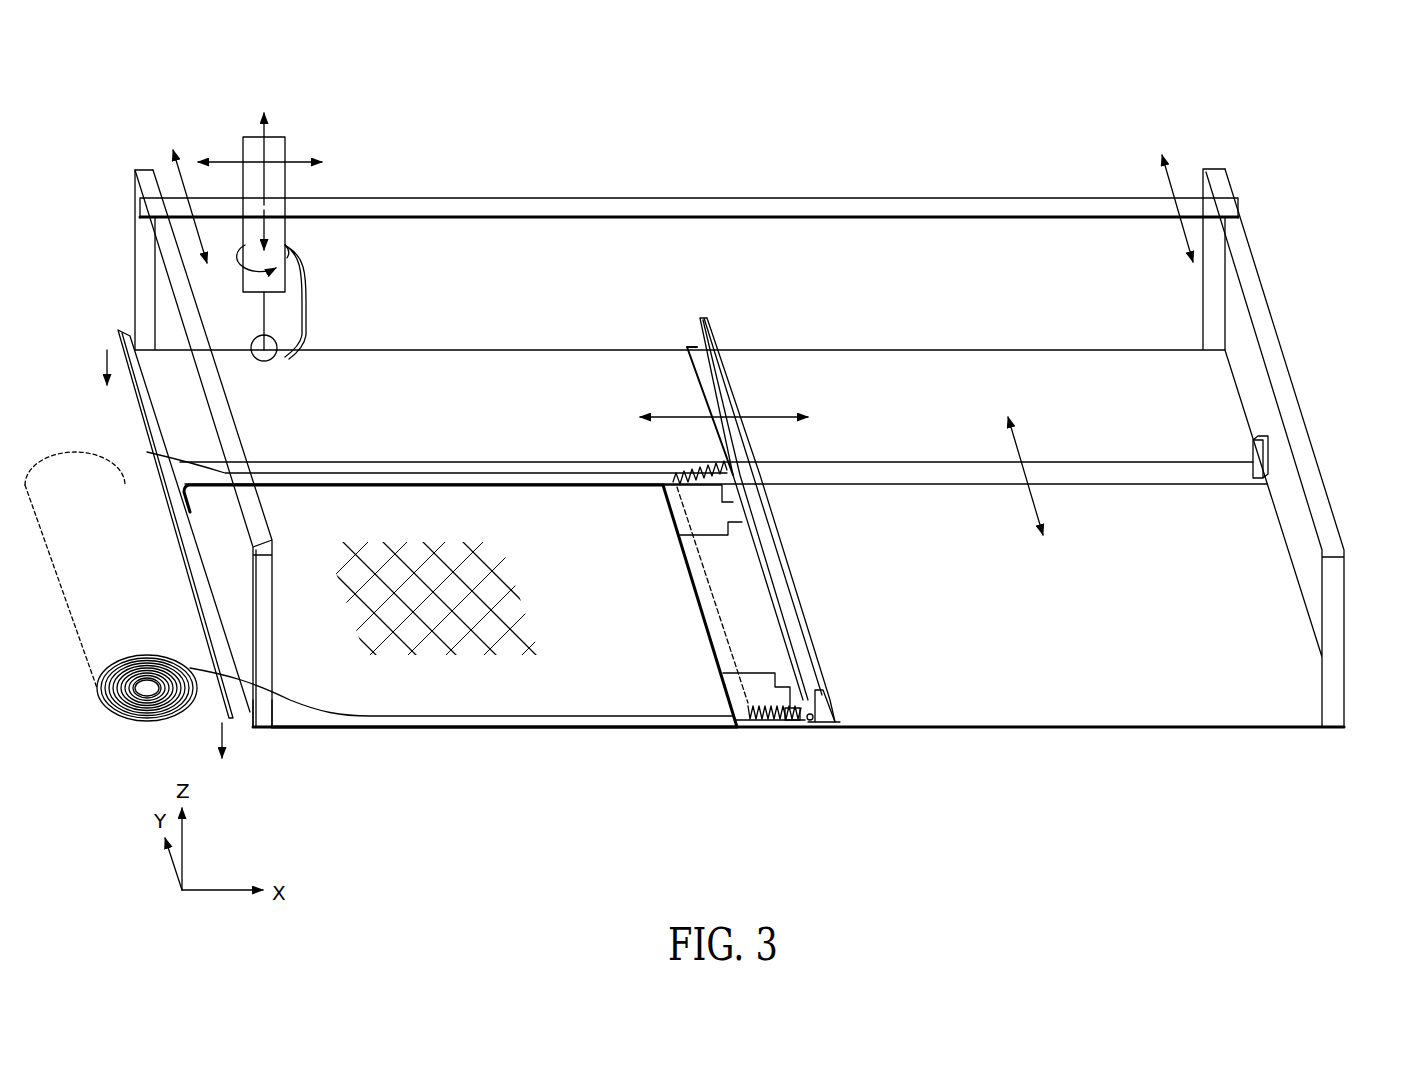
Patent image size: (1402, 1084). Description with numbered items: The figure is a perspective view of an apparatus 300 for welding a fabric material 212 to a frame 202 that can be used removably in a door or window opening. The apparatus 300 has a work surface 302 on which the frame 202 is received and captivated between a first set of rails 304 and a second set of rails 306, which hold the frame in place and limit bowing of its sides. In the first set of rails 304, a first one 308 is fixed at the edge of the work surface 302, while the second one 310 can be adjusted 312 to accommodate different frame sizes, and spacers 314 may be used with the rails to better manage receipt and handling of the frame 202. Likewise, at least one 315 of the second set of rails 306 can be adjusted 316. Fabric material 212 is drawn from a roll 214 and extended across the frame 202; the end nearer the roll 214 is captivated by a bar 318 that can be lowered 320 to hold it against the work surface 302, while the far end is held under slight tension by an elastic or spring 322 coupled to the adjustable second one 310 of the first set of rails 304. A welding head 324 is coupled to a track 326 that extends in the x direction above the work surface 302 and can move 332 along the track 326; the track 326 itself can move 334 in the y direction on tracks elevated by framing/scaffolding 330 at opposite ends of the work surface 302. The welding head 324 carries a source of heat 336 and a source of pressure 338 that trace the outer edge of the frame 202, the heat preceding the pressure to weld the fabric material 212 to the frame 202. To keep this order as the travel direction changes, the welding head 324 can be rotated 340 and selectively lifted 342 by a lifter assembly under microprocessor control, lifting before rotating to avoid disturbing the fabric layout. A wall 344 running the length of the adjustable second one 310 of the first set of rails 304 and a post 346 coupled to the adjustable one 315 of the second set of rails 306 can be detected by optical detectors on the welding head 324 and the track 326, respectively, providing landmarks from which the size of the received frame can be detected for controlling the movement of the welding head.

The apparatus 300 is at (90, 85).
The frame 202 is at (648, 727).
The fabric material 212 is at (533, 727).
The roll 214 is at (110, 705).
The work surface 302 is at (1092, 718).
The first set of rails 304 is at (250, 698).
The second set of rails 306 is at (898, 472).
The first one of the first set of rails 308 is at (213, 472).
The second one of the first set of rails 310 is at (722, 348).
The adjustment of the second rail 312 is at (672, 415).
The spacers 314 is at (693, 505).
The adjustable one of the second set of rails 315 is at (1150, 470).
The adjustment of the second-set rail 316 is at (1005, 425).
The bar 318 is at (135, 412).
The lowering of the bar 320 is at (104, 358).
The spring 322 is at (693, 460).
The welding head 324 is at (270, 277).
The track 326 is at (768, 207).
The framing/scaffolding 330 is at (232, 437).
The movement of the welding head along the track 332 is at (235, 133).
The movement of the track 334 is at (178, 177).
The source of heat 336 is at (303, 318).
The source of pressure 338 is at (264, 362).
The rotation of the welding head 340 is at (287, 252).
The lifting of the welding head 342 is at (270, 116).
The wall 344 is at (695, 333).
The post 346 is at (1265, 460).